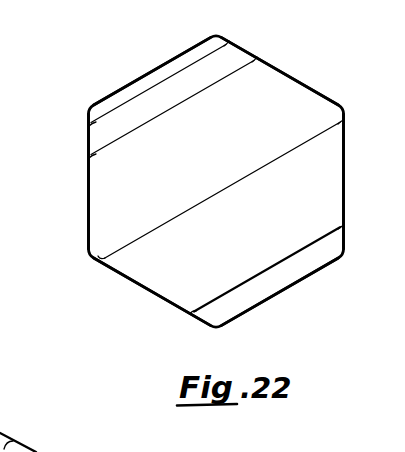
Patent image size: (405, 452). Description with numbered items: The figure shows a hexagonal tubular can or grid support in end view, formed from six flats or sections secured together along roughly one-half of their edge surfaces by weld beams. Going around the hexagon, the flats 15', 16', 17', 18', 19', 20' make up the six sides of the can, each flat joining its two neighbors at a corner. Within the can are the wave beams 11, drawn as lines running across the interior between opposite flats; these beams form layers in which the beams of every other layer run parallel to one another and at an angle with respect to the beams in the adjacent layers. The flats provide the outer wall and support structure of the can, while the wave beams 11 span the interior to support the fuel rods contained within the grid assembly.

The wave beams 11 is at (194, 93).
The flat 15' is at (370, 181).
The flat 16' is at (279, 292).
The flat 17' is at (152, 292).
The flat 18' is at (63, 181).
The flat 19' is at (152, 71).
The flat 20' is at (285, 71).